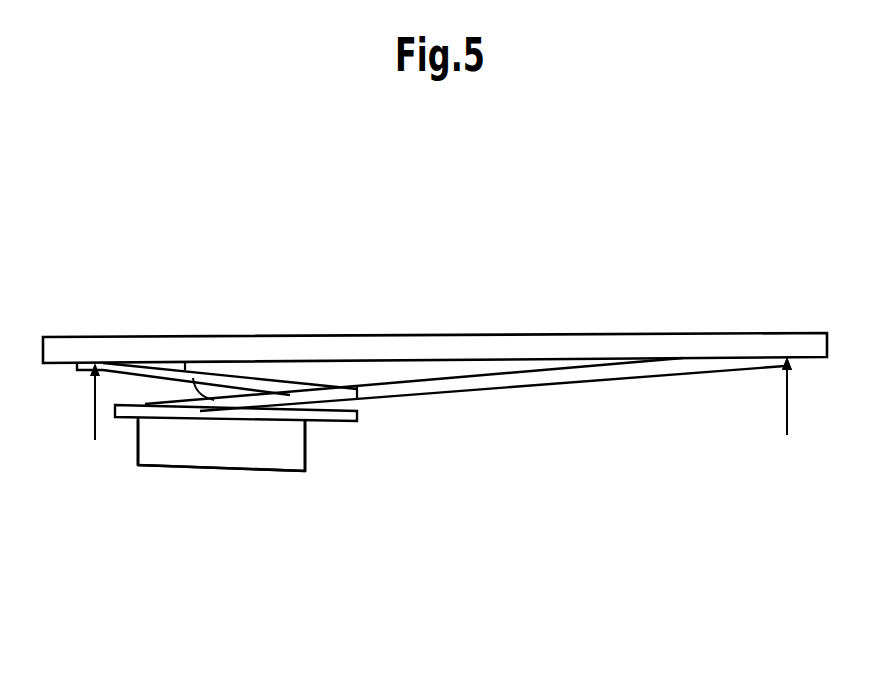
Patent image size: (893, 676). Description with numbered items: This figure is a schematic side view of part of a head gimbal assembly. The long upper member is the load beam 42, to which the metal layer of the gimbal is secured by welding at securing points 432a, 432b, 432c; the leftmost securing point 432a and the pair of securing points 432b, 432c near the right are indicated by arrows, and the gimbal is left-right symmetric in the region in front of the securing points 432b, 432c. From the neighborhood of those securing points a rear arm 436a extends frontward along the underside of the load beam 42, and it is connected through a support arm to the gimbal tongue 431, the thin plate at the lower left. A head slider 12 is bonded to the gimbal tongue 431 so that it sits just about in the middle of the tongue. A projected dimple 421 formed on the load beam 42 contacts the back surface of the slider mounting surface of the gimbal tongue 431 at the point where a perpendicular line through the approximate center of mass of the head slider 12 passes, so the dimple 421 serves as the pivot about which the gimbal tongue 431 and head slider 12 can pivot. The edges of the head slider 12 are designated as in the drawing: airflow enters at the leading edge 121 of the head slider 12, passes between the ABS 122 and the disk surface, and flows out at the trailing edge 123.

The load beam 42 is at (275, 336).
The projected dimple 421 is at (297, 370).
The securing point 432a is at (93, 337).
The securing point 432b is at (784, 358).
The securing point 432c is at (787, 396).
The rear arm 436a is at (489, 388).
The gimbal tongue 431 is at (337, 423).
The head slider 12 is at (243, 497).
The leading edge 121 is at (307, 450).
The ABS 122 is at (172, 468).
The trailing edge 123 is at (137, 440).